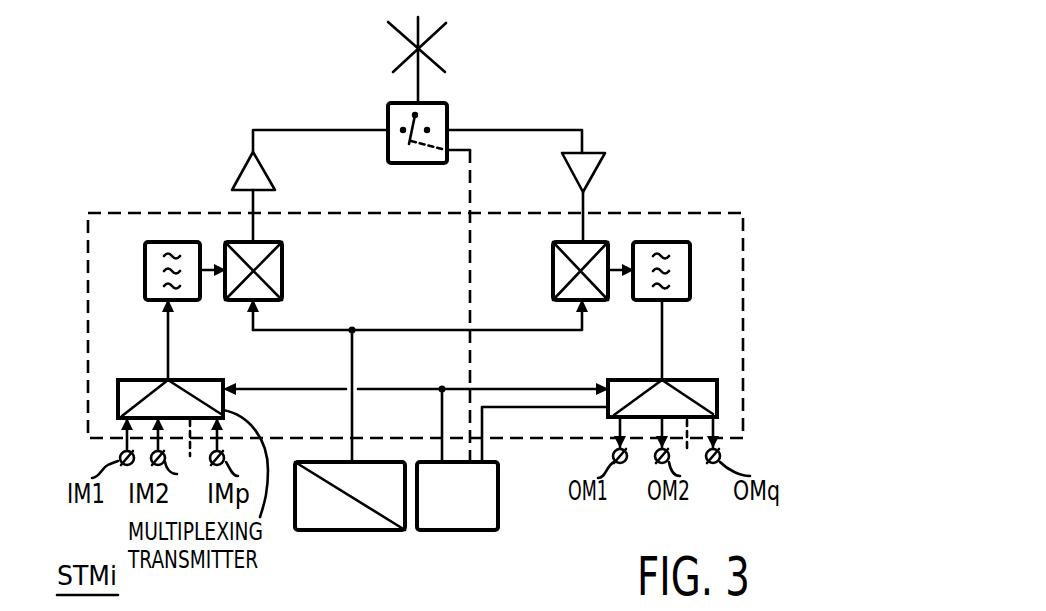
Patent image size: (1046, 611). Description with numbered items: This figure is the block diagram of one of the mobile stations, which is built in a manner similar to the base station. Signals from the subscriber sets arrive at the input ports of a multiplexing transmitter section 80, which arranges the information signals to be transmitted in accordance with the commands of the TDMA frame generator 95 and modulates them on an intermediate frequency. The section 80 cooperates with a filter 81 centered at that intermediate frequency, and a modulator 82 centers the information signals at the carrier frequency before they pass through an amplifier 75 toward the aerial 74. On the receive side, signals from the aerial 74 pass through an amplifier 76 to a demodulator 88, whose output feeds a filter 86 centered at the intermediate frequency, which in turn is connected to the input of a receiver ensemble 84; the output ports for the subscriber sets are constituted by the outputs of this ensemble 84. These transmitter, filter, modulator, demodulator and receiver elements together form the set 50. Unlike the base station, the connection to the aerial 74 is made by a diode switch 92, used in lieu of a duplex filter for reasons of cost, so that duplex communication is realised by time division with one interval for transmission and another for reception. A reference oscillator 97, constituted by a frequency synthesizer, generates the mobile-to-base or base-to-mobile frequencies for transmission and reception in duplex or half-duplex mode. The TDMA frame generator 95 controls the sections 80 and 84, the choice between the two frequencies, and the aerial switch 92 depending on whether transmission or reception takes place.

The aerial 74 is at (438, 56).
The switch 92 is at (447, 116).
The amplifier 75 is at (236, 174).
The amplifier 76 is at (604, 176).
The set 50 is at (710, 213).
The filter 81 is at (146, 272).
The modulator 82 is at (282, 272).
The demodulator 88 is at (554, 268).
The filter 86 is at (690, 272).
The multiplexing transmitter section 80 is at (137, 378).
The receiver ensemble 84 is at (703, 380).
The reference oscillator 97 is at (347, 531).
The TDMA frame generator 95 is at (462, 531).